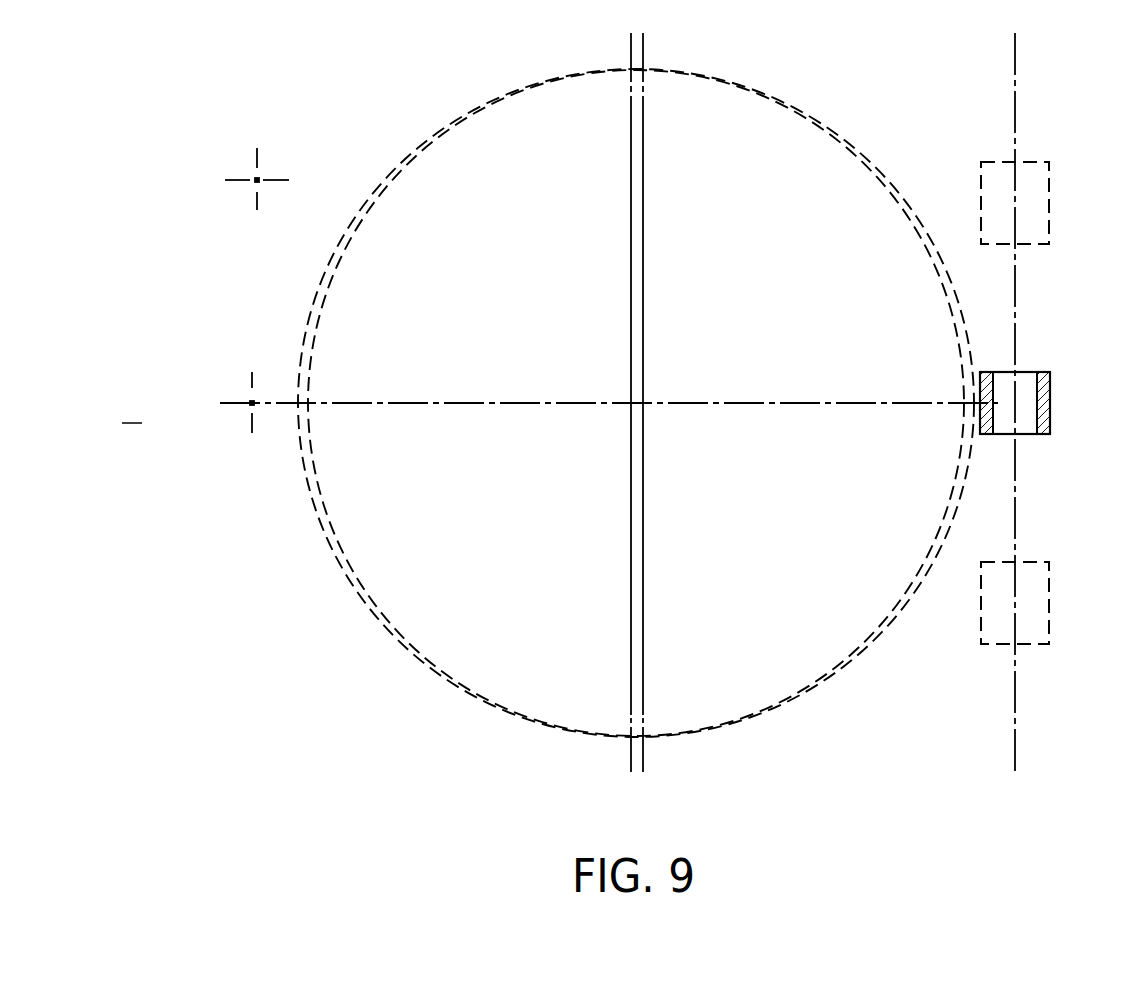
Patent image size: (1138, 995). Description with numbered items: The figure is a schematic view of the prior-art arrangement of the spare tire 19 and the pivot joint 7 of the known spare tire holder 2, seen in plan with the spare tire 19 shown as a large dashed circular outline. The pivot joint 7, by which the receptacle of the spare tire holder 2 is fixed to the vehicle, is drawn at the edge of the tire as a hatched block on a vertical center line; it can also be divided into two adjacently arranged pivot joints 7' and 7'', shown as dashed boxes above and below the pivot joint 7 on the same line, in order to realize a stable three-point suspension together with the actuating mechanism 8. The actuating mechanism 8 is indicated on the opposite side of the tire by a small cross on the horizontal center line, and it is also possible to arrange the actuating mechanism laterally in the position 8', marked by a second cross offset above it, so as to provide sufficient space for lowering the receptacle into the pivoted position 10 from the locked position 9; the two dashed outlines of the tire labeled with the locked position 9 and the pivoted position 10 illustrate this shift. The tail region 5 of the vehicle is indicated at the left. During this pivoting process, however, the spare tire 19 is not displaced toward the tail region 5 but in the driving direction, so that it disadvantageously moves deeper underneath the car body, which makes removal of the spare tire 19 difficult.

The spare tire holder 2 is at (1052, 402).
The tail region 5 is at (132, 411).
The pivot joint 7 is at (1034, 412).
The pivot joint 7' is at (1043, 203).
The pivot joint 7'' is at (1045, 603).
The actuating mechanism 8 is at (232, 395).
The lateral position of actuating mechanism 8' is at (266, 172).
The locked position 9 is at (300, 483).
The pivoted position 10 is at (334, 539).
The spare tire 19 is at (593, 403).